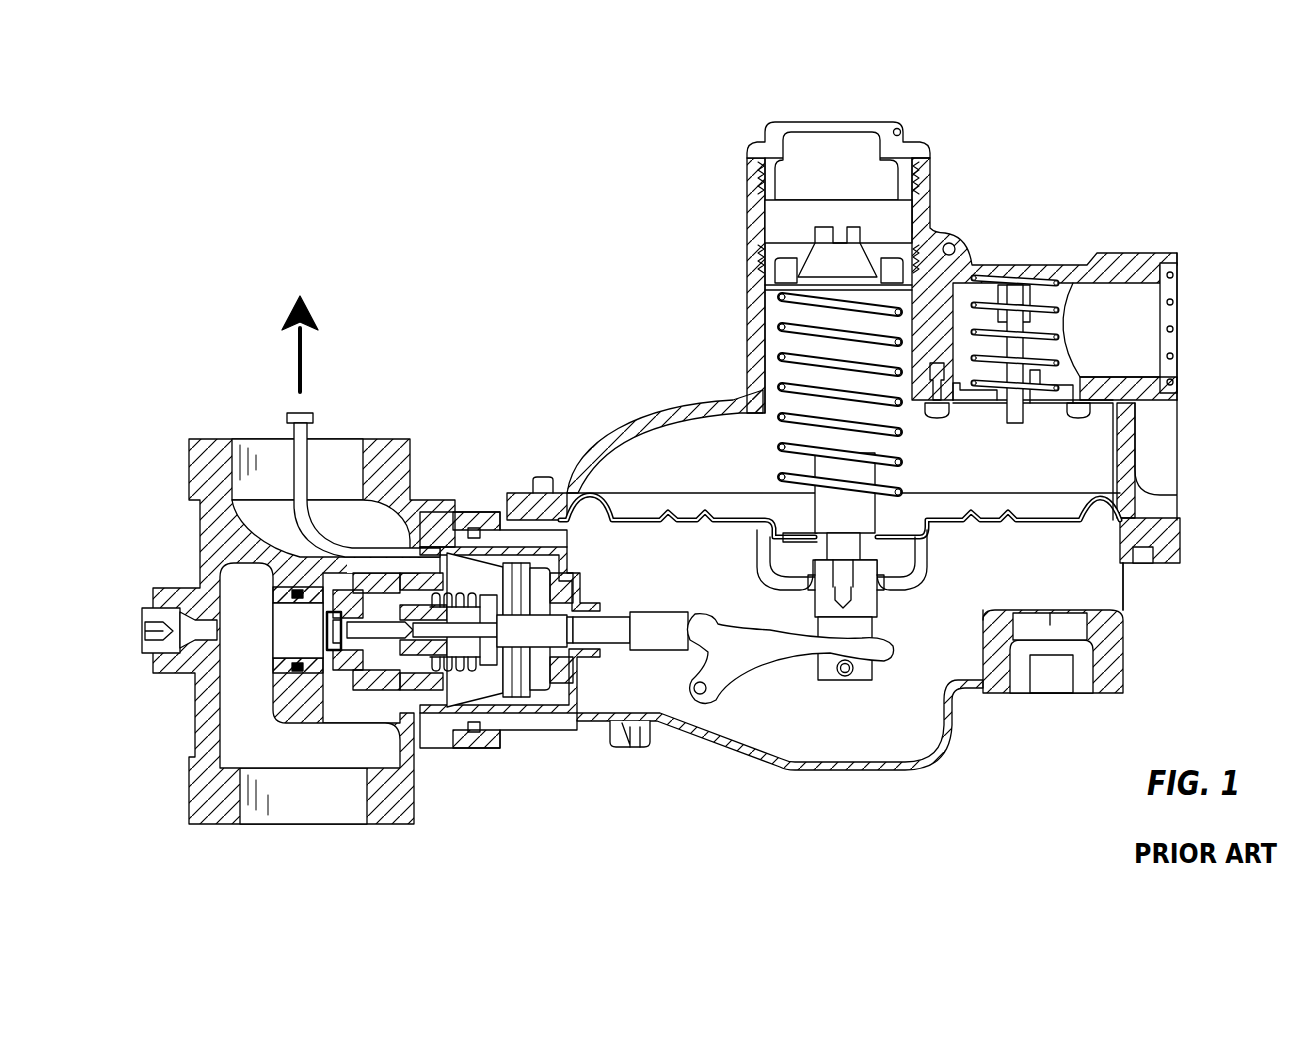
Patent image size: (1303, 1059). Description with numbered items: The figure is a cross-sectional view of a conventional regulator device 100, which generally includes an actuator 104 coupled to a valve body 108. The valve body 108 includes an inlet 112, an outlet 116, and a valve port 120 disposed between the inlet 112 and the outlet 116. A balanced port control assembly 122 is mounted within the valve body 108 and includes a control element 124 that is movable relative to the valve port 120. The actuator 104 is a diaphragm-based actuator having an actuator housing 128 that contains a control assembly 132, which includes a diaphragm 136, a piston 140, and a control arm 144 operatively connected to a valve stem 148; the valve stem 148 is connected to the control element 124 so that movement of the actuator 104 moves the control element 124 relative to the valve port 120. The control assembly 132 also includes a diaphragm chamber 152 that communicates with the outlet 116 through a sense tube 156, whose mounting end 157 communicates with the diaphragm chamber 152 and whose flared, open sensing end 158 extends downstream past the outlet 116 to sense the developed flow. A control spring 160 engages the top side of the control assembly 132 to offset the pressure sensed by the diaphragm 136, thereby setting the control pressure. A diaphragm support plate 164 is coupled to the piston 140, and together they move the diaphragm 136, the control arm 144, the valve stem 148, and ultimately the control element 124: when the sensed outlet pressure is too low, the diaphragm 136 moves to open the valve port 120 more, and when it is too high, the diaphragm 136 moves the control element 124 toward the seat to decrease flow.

The regulator device 100 is at (942, 98).
The actuator 104 is at (1070, 246).
The valve body 108 is at (400, 412).
The inlet 112 is at (348, 812).
The outlet 116 is at (275, 455).
The valve port 120 is at (311, 673).
The balanced port control assembly 122 is at (482, 682).
The control element 124 is at (345, 655).
The actuator housing 128 is at (1125, 451).
The control assembly 132 is at (912, 708).
The diaphragm 136 is at (1077, 583).
The piston 140 is at (838, 482).
The control arm 144 is at (760, 668).
The valve stem 148 is at (618, 640).
The diaphragm chamber 152 is at (1060, 528).
The sense tube 156 is at (300, 478).
The mounting end 157 is at (418, 550).
The sensing end 158 is at (306, 414).
The control spring 160 is at (790, 300).
The diaphragm support plate 164 is at (910, 573).